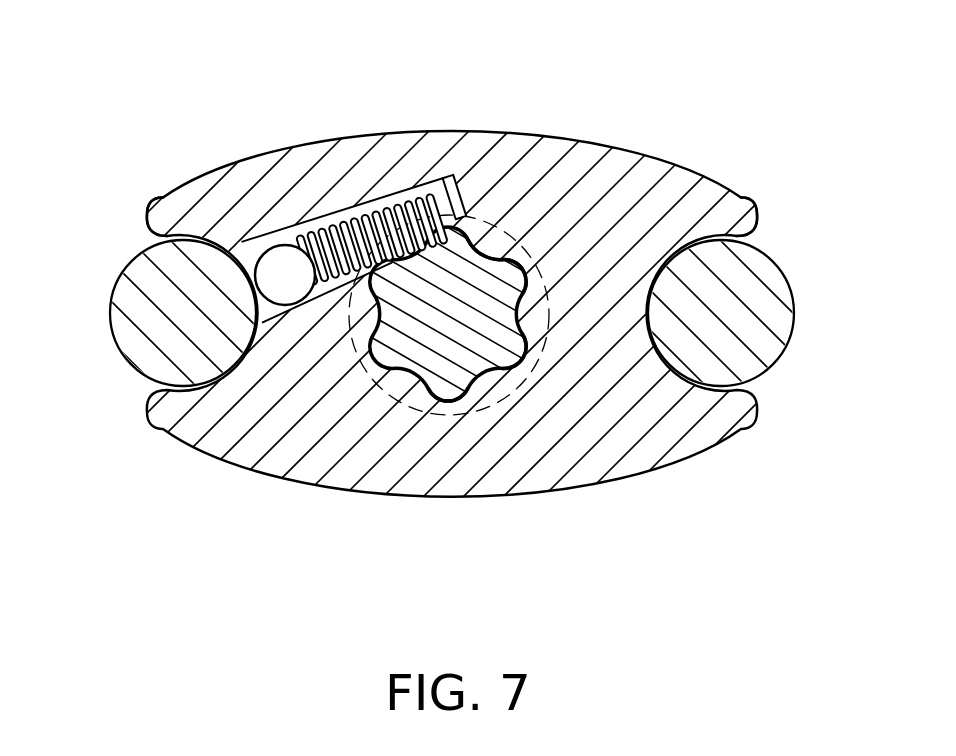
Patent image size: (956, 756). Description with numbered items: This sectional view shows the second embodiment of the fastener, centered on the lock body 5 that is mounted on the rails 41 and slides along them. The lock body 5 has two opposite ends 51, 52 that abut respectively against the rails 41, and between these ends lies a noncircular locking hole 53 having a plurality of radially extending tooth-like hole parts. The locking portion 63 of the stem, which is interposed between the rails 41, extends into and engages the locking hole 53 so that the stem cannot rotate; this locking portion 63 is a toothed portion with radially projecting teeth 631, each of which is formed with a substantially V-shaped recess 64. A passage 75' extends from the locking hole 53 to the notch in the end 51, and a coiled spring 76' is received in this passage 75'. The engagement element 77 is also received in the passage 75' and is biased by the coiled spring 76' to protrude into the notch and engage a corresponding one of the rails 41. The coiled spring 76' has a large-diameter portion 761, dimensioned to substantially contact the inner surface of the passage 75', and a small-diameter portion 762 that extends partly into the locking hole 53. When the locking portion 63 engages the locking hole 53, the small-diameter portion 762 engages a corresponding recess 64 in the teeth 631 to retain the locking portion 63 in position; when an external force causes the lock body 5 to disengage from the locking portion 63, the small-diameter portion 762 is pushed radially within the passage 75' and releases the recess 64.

The lock body 5 is at (625, 140).
The rails 41 is at (138, 316).
The end of the lock body 51 is at (210, 236).
The end of the lock body 52 is at (697, 237).
The locking hole 53 is at (523, 363).
The locking portion 63 is at (425, 337).
The projecting teeth 631 is at (538, 257).
The recess 64 is at (498, 248).
The passage 75' is at (327, 169).
The coiled spring 76' is at (342, 147).
The large-diameter portion 761 is at (300, 238).
The small-diameter portion 762 is at (442, 198).
The engagement element 77 is at (292, 283).